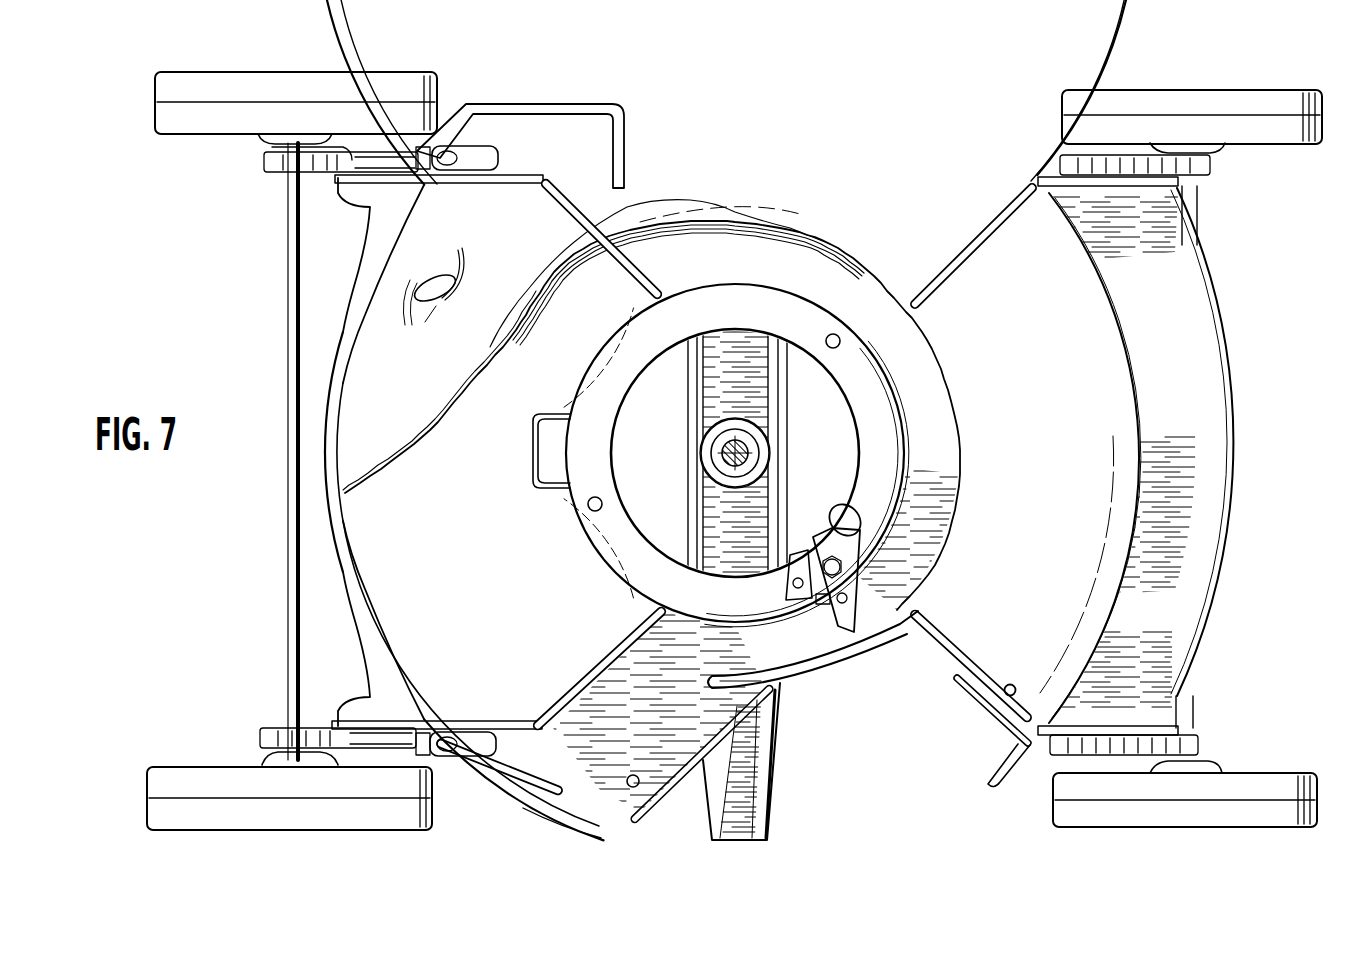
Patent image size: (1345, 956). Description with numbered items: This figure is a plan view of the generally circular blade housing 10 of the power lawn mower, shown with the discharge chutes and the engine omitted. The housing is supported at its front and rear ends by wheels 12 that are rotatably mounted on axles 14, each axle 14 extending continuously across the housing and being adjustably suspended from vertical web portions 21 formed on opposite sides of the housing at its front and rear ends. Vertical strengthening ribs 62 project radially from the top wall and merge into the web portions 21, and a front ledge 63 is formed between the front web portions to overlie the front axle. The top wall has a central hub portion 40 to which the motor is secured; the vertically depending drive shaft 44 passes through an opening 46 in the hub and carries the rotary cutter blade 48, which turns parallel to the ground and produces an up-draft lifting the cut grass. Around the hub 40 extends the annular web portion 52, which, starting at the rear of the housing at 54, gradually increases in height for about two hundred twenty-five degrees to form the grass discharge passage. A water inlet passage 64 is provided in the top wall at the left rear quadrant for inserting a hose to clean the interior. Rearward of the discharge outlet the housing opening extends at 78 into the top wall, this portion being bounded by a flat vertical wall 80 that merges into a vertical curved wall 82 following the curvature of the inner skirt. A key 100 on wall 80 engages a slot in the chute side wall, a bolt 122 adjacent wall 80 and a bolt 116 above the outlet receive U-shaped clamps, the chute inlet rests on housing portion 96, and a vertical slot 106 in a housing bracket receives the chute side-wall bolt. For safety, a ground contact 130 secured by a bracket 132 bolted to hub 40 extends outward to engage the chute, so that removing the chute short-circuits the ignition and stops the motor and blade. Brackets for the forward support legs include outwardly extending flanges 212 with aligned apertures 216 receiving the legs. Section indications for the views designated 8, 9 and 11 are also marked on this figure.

The blade housing 10 is at (793, 420).
The axle 14 is at (290, 273).
The vertical web portion 21 is at (455, 176).
The vertical strengthening rib 62 is at (582, 222).
The aligned aperture 216 is at (463, 156).
The outwardly extending flange 212 is at (470, 161).
The water inlet passage 64 is at (455, 278).
The starting point of web portion rise 54 is at (401, 460).
The drive shaft 44 is at (740, 445).
The opening 46 is at (853, 420).
The hub portion 40 is at (593, 535).
The annular web portion 52 is at (1098, 414).
The front ledge 63 is at (1218, 380).
The bracket 132 is at (843, 587).
The ground contact 130 is at (840, 630).
The vertical curved wall 82 is at (822, 668).
The threaded bolt 116 is at (1018, 686).
The housing portion 96 is at (960, 682).
The vertical slot 106 is at (1000, 766).
The threaded bolt 122 is at (634, 773).
The rotary cutter blade 48 is at (750, 752).
The top wall opening portion 78 is at (880, 754).
The key 100 is at (681, 778).
The flat vertical wall 80 is at (620, 826).
The section line 8- 8 is at (330, 551).
The section line 9- 9 is at (740, 30).
The section line 11- 11 is at (1217, 703).
The wheel 12 is at (793, 549).